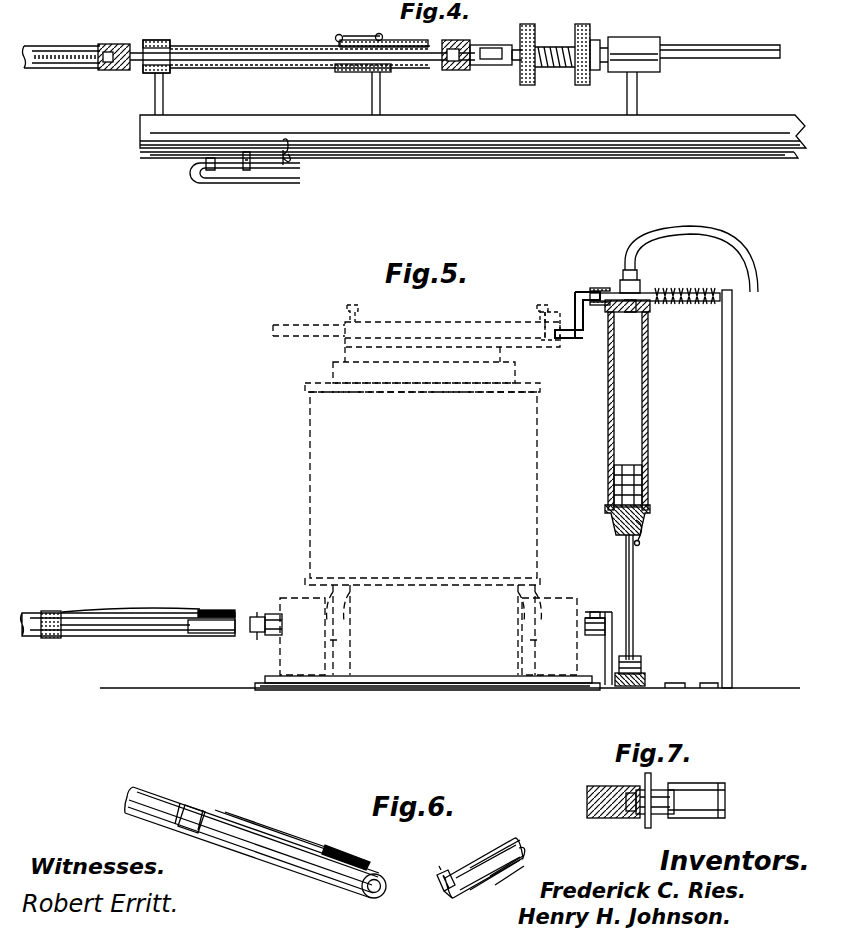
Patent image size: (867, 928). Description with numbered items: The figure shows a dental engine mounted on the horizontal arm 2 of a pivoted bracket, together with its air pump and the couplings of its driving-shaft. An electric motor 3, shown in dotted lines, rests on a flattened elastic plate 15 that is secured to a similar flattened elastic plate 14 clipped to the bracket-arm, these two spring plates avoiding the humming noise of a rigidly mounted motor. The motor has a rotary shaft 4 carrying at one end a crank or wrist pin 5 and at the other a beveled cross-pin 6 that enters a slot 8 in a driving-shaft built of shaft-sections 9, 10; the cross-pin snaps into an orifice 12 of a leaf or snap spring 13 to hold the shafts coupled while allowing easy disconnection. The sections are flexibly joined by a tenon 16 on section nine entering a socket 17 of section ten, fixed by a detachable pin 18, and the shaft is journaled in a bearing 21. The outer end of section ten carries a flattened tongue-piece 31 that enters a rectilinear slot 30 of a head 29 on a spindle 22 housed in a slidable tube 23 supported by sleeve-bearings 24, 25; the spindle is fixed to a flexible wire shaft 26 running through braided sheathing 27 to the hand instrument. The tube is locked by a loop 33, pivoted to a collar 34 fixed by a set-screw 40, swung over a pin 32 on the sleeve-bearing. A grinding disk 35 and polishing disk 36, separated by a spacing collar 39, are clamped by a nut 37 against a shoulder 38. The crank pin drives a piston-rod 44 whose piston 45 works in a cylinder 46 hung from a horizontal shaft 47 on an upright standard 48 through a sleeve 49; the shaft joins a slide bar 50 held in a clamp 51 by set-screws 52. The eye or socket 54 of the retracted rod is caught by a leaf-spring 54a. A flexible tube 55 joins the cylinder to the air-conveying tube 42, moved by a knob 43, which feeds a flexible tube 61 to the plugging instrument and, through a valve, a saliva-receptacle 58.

In FIG. 4, the horizontal arm 2 is at (473, 131).
In FIG. 5, the electric motor 3 is at (428, 533).
In FIG. 5, the rotary shaft 4 is at (592, 612).
In FIG. 6, the rotary shaft 4 is at (468, 860).
In FIG. 5, the crank or wrist pin 5 is at (645, 678).
In FIG. 5, the cross-pin 6 is at (258, 614).
In FIG. 6, the cross-pin 6 is at (446, 870).
In FIG. 5, the slot 8 is at (225, 634).
In FIG. 6, the slot 8 is at (372, 898).
In FIG. 5, the shaft-section 9 is at (104, 636).
In FIG. 6, the shaft-section 9 is at (264, 852).
In FIG. 7, the shaft-section 9 is at (726, 804).
In FIG. 7, the shaft-section 10 is at (587, 806).
In FIG. 5, the orifice 12 is at (220, 610).
In FIG. 6, the orifice 12 is at (362, 860).
In FIG. 5, the leaf or snap spring 13 is at (140, 608).
In FIG. 6, the leaf or snap spring 13 is at (302, 845).
In FIG. 5, the flattened elastic plate 14 is at (306, 690).
In FIG. 5, the flattened elastic plate 15 is at (266, 676).
In FIG. 7, the tenon 16 is at (634, 818).
In FIG. 7, the socket 17 is at (628, 790).
In FIG. 7, the detachable pin 18 is at (651, 826).
In FIG. 4, the bearing 21 is at (627, 45).
In FIG. 4, the spindle 22 is at (418, 68).
In FIG. 4, the tube 23 is at (204, 46).
In FIG. 4, the sleeve-bearing 24 is at (390, 44).
In FIG. 4, the sleeve-bearing 25 is at (154, 40).
In FIG. 4, the flexible or wire shaft 26 is at (222, 70).
In FIG. 4, the sheathing 27 is at (70, 72).
In FIG. 4, the head 29 is at (456, 64).
In FIG. 4, the rectilinear slot 30 is at (476, 66).
In FIG. 4, the flattened extension or tongue-piece 31 is at (490, 48).
In FIG. 4, the pin 32 is at (380, 33).
In FIG. 4, the loop 33 is at (343, 36).
In FIG. 4, the collar 34 is at (354, 57).
In FIG. 4, the disk or wheel 35 is at (531, 42).
In FIG. 4, the disk 36 is at (585, 28).
In FIG. 4, the nut 37 is at (514, 62).
In FIG. 4, the shoulder 38 is at (594, 70).
In FIG. 4, the spacing collar or sleeve 39 is at (552, 68).
In FIG. 4, the set-screw 40 is at (340, 72).
In FIG. 4, the air-conveying tube 42 is at (488, 160).
In FIG. 4, the knob 43 is at (292, 148).
In FIG. 5, the piston-rod 44 is at (634, 596).
In FIG. 5, the piston 45 is at (648, 478).
In FIG. 5, the cylinder 46 is at (648, 408).
In FIG. 5, the horizontal shaft 47 is at (672, 300).
In FIG. 5, the upright or standard 48 is at (698, 489).
In FIG. 5, the sleeve 49 is at (602, 290).
In FIG. 5, the slide bar or rod 50 is at (572, 314).
In FIG. 5, the clamp 51 is at (422, 340).
In FIG. 5, the set-screws 52 is at (353, 308).
In FIG. 5, the eye or socket 54 is at (640, 668).
In FIG. 5, the leaf-spring 54a is at (646, 527).
In FIG. 5, the flexible tube 55 is at (732, 250).
In FIG. 5, the saliva-receptacle 58 is at (685, 282).
In FIG. 4, the flexible tube 61 is at (246, 180).